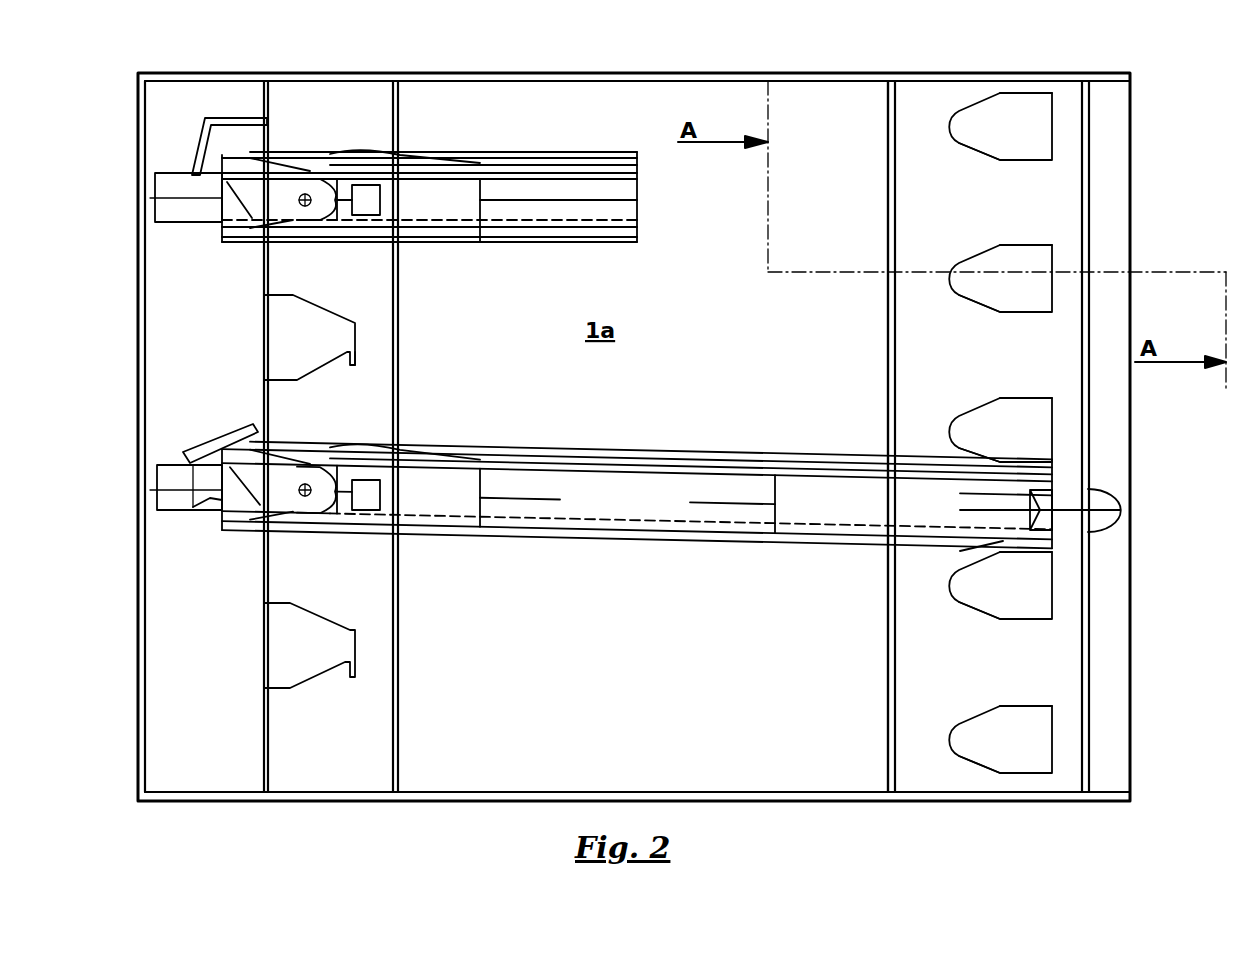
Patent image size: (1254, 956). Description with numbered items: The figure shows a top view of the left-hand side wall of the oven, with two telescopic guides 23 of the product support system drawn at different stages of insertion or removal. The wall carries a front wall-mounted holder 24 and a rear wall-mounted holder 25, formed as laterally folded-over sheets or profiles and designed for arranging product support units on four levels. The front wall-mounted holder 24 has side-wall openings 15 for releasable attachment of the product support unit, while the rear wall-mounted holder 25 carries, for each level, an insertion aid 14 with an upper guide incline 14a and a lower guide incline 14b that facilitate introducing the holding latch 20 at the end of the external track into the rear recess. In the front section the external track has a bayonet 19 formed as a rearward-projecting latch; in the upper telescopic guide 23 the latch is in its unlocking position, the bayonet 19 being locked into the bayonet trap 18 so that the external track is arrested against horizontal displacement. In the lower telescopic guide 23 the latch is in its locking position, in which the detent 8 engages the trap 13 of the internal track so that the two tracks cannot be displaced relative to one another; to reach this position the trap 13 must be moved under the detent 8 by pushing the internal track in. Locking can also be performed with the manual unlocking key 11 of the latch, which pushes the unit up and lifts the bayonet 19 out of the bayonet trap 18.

The detent 8 is at (193, 172).
The manual unlocking key 11 is at (218, 442).
The trap 13 is at (190, 177).
The insertion aid 14 is at (945, 432).
The upper guide incline 14a is at (960, 107).
The lower guide incline 14b is at (972, 152).
The side-wall opening 15 is at (290, 340).
The bayonet trap 18 is at (355, 366).
The bayonet 19 is at (378, 198).
The holding latch 20 is at (1115, 515).
The telescopic guide 23 is at (530, 490).
The front wall-mounted holder 24 is at (360, 595).
The rear wall-mounted holder 25 is at (925, 625).